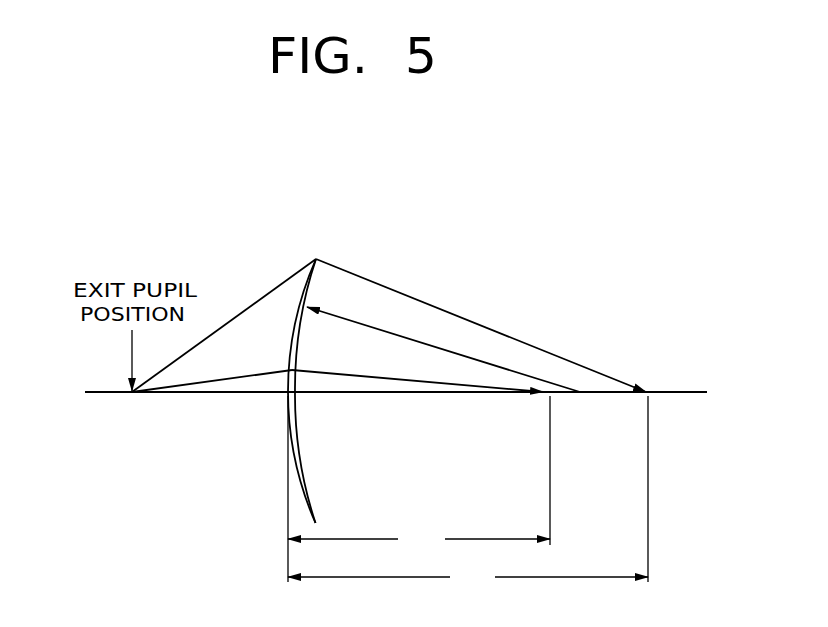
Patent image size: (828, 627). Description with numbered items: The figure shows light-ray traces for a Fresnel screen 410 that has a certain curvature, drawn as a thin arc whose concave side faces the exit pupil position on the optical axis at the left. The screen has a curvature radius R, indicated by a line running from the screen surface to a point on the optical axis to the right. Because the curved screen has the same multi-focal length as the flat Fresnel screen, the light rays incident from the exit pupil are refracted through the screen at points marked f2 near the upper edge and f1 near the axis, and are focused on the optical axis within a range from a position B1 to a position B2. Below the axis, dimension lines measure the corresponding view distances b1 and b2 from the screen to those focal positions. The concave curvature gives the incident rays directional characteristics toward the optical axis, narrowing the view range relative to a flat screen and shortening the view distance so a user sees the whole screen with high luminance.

The Fresnel screen 410 is at (312, 288).
The upper focal ray through lens apex f2 is at (389, 311).
The lower focal ray through lens f1 is at (337, 367).
The curvature radius R is at (443, 349).
The position B1' B1 is at (525, 470).
The position B2' B2 is at (626, 489).
The view distance b1' b1 is at (419, 541).
The view distance b2' b2 is at (468, 579).